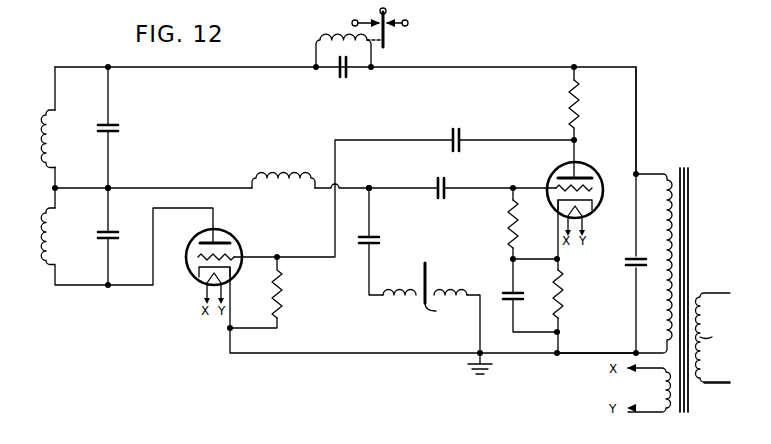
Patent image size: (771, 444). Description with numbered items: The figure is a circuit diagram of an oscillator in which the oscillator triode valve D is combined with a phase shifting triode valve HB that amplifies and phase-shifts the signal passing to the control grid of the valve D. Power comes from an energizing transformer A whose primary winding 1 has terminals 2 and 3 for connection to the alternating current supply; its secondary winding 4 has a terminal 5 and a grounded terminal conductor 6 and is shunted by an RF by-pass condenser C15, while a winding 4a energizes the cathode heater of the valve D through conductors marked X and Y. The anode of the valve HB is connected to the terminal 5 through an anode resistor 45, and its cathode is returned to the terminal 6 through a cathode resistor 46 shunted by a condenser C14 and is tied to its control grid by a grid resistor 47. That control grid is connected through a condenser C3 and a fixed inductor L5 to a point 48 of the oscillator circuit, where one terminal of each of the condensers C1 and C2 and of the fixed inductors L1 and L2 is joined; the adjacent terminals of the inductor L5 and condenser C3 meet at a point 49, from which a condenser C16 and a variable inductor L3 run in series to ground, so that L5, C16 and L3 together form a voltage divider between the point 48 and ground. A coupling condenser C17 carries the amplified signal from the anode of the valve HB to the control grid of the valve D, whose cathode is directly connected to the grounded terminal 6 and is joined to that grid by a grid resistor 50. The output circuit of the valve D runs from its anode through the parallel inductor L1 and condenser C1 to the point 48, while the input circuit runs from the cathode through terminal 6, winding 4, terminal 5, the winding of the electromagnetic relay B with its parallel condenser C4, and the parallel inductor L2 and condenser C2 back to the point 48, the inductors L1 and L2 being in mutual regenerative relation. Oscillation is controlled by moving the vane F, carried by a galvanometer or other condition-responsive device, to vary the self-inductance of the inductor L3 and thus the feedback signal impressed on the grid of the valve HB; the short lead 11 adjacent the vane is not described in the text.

The fixed inductor L2 is at (48, 139).
The fixed inductor L1 is at (50, 238).
The condenser C2 is at (119, 129).
The condenser C1 is at (119, 236).
The point of the oscillator circuit 48 is at (110, 187).
The fixed inductor L5 is at (286, 187).
The triode valve D is at (252, 240).
The grid resistor 50 is at (282, 290).
The electromagnetic relay B is at (312, 32).
The condenser C4 is at (342, 80).
The coupling condenser C17 is at (457, 128).
The point 49 is at (371, 187).
The condenser C3 is at (443, 199).
The condenser C16 is at (380, 243).
The grid resistor 47 is at (508, 222).
The phase shifting triode valve HB is at (548, 175).
The anode resistor 45 is at (568, 105).
The terminal of the secondary winding 5 is at (634, 118).
The variable inductor L3 is at (408, 295).
The vane F is at (428, 274).
The crystal electrode lead 11 is at (444, 313).
The condenser C14 is at (499, 295).
The cathode resistor 46 is at (562, 300).
The terminal conductor of the secondary winding 6 is at (598, 352).
The RF by-pass condenser C15 is at (622, 262).
The secondary winding 4 is at (665, 253).
The heater winding 4a is at (667, 388).
The primary winding terminal 3 is at (720, 292).
The primary winding 1 is at (712, 333).
The primary winding terminal 2 is at (723, 383).
The energizing transformer A is at (707, 186).